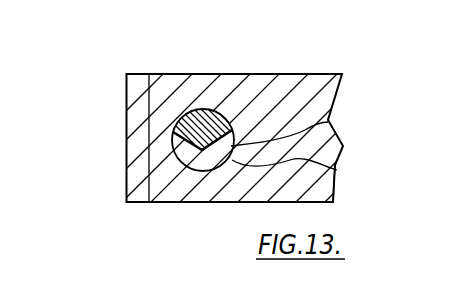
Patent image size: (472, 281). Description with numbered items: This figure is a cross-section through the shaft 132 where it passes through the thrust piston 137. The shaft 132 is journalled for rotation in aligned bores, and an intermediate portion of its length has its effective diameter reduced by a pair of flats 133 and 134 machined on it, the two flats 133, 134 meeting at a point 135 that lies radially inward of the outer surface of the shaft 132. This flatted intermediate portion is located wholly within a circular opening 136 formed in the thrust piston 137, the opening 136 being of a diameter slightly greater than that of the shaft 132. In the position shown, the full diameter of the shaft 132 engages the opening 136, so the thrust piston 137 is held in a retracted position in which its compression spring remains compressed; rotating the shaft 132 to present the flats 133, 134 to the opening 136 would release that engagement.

The shaft 132 is at (207, 109).
The flat 133 is at (329, 127).
The flat 134 is at (178, 154).
The point 135 is at (202, 150).
The circular opening 136 is at (333, 166).
The thrust piston 137 is at (325, 193).